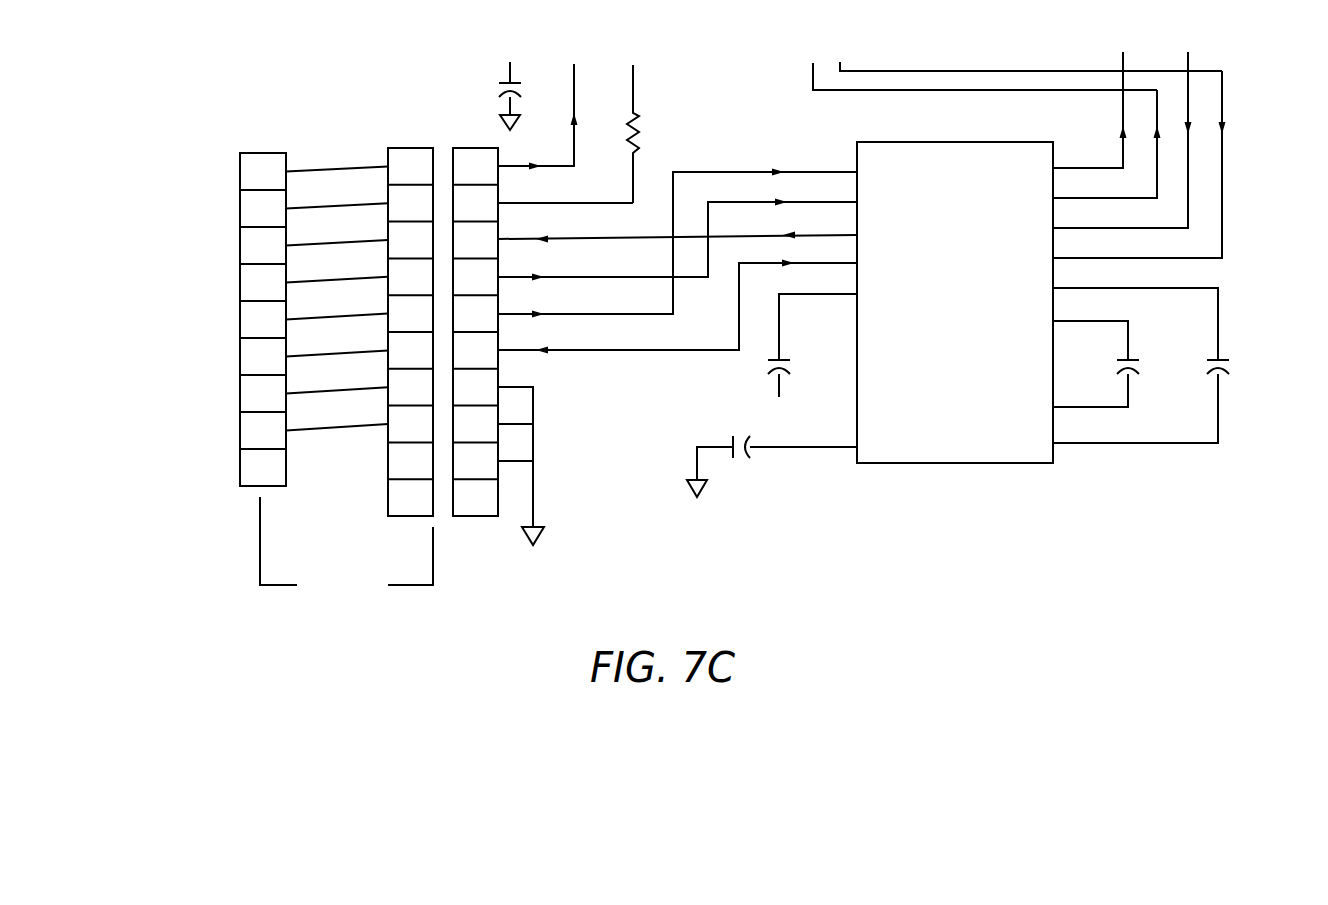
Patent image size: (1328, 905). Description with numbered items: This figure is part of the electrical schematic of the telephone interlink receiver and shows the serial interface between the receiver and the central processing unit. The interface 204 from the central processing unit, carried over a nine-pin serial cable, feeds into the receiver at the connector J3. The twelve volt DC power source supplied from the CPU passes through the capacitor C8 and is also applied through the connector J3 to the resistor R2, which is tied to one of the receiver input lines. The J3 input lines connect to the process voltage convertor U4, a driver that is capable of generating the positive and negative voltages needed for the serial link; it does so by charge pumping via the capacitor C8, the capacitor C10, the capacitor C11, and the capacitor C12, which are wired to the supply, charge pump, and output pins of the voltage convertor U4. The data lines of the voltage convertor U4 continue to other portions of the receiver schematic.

The interface 204 is at (670, 310).
The J3 input connector J3 is at (443, 318).
The resistor R2 is at (665, 134).
The capacitor C8 is at (647, 230).
The capacitor C10 is at (740, 453).
The capacitor C11 is at (1147, 365).
The capacitor C12 is at (1238, 365).
The voltage convertor U4 is at (954, 307).